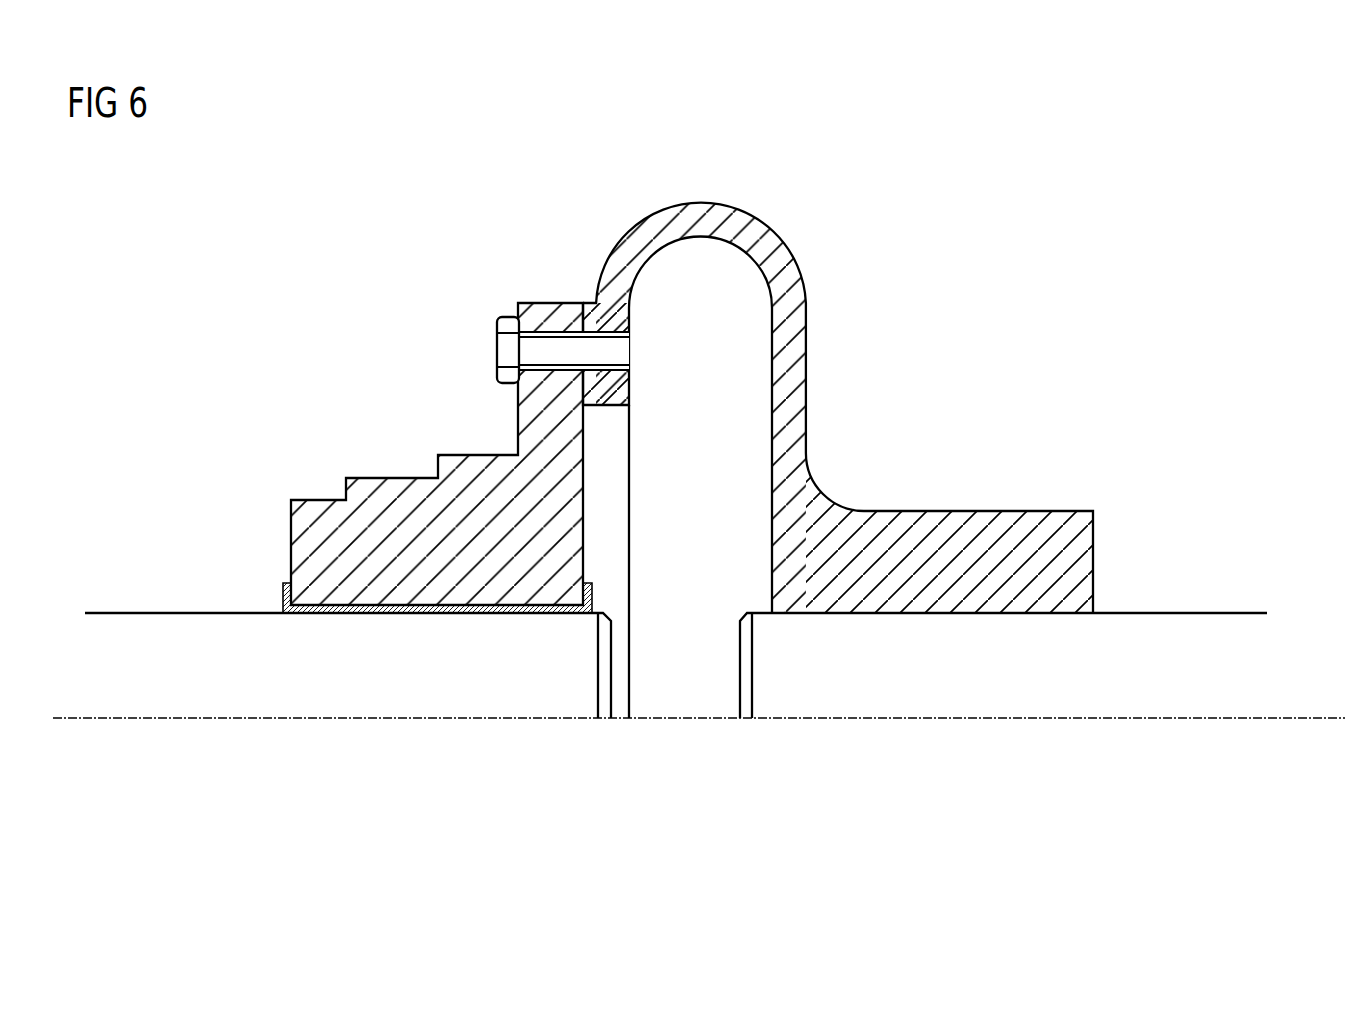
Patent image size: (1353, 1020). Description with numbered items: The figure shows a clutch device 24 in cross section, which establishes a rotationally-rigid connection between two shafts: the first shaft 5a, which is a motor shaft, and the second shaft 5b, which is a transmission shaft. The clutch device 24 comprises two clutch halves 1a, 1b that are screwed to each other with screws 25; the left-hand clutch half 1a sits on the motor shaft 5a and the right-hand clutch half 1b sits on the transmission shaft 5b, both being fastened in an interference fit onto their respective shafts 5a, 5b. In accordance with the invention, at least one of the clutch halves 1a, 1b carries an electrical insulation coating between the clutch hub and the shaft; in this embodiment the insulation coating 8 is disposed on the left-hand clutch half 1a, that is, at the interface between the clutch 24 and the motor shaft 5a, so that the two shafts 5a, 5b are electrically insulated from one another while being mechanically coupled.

The clutch half 1a is at (395, 488).
The clutch half 1b is at (963, 520).
The clutch device 24 is at (712, 196).
The screws 25 is at (506, 352).
The insulation coating 8 is at (284, 597).
The first shaft 5a is at (360, 712).
The second shaft 5b is at (970, 712).